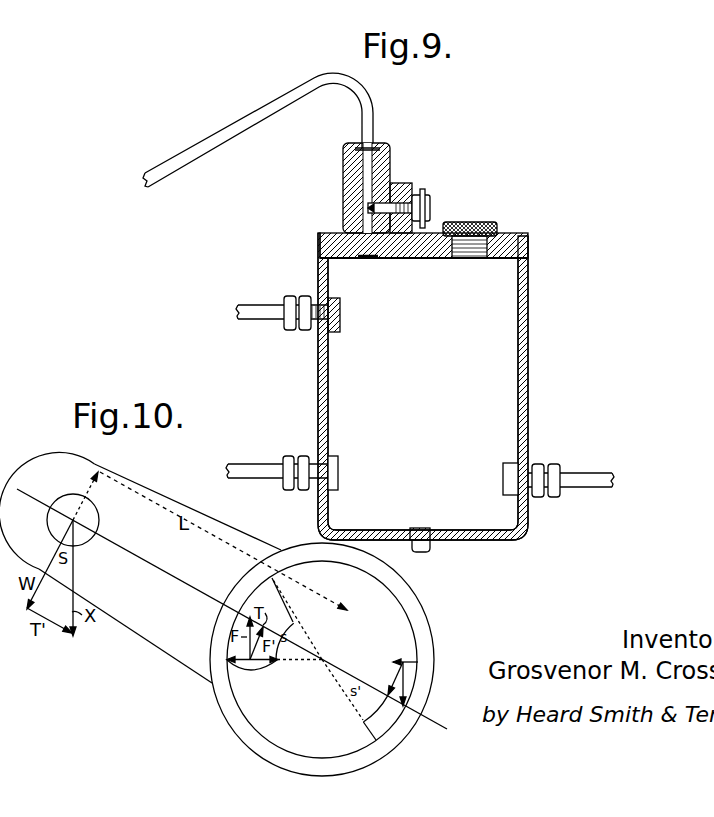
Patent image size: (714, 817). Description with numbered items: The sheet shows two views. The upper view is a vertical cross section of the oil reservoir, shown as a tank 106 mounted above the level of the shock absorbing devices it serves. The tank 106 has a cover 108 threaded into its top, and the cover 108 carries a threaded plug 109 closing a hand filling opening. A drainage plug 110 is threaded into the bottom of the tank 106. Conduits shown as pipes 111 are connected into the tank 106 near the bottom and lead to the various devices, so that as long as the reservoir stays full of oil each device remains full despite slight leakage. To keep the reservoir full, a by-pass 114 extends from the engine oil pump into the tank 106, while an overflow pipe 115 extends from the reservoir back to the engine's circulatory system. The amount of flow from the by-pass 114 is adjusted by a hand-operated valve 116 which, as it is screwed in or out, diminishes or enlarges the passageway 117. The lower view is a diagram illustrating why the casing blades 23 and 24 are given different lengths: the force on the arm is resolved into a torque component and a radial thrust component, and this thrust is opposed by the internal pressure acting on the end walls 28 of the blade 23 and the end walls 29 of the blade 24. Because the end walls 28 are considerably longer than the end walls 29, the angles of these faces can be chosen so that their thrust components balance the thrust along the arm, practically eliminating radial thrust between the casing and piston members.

In FIG. 9, the tank 106 is at (530, 331).
In FIG. 9, the cover 108 is at (512, 240).
In FIG. 9, the threaded plug 109 is at (470, 222).
In FIG. 9, the drainage plug 110 is at (427, 548).
In FIG. 9, the pipes 111 is at (253, 468).
In FIG. 9, the by-pass 114 is at (262, 112).
In FIG. 9, the overflow pipe 115 is at (262, 312).
In FIG. 9, the hand-operated valve 116 is at (385, 202).
In FIG. 9, the passageway 117 is at (363, 258).
In FIG. 10, the blade 23 is at (244, 622).
In FIG. 10, the blade 24 is at (412, 688).
In FIG. 10, the end walls 28 is at (228, 656).
In FIG. 10, the end walls 29 is at (413, 667).